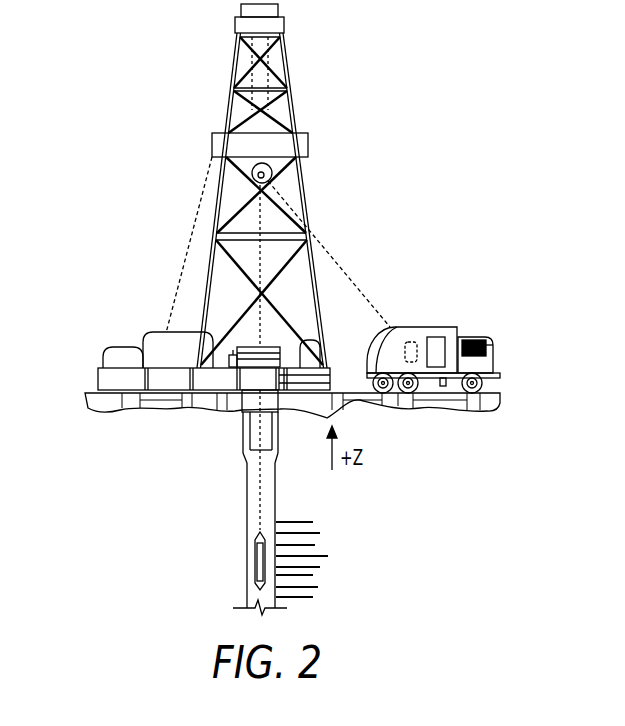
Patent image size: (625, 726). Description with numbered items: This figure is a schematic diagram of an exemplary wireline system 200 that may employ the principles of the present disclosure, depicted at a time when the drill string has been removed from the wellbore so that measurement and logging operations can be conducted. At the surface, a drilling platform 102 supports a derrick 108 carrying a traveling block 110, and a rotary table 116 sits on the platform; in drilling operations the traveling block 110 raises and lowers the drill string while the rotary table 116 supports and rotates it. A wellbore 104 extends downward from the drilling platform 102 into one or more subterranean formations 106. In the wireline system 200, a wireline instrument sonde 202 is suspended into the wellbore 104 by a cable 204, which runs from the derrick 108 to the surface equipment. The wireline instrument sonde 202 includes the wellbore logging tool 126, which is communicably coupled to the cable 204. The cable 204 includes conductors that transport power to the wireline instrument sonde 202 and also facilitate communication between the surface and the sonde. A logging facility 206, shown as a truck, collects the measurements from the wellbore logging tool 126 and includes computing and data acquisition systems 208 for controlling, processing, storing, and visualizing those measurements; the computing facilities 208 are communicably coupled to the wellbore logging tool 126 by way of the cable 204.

The drilling platform 102 is at (98, 383).
The wellbore 104 is at (278, 490).
The subterranean formations 106 is at (325, 515).
The derrick 108 is at (290, 73).
The traveling block 110 is at (272, 176).
The rotary table 116 is at (270, 345).
The wellbore logging tool 126 is at (258, 562).
The wireline system 200 is at (399, 141).
The wireline instrument sonde 202 is at (253, 543).
The cable 204 is at (342, 268).
The logging facility 206 is at (452, 327).
The computing and data acquisition systems 208 is at (413, 342).